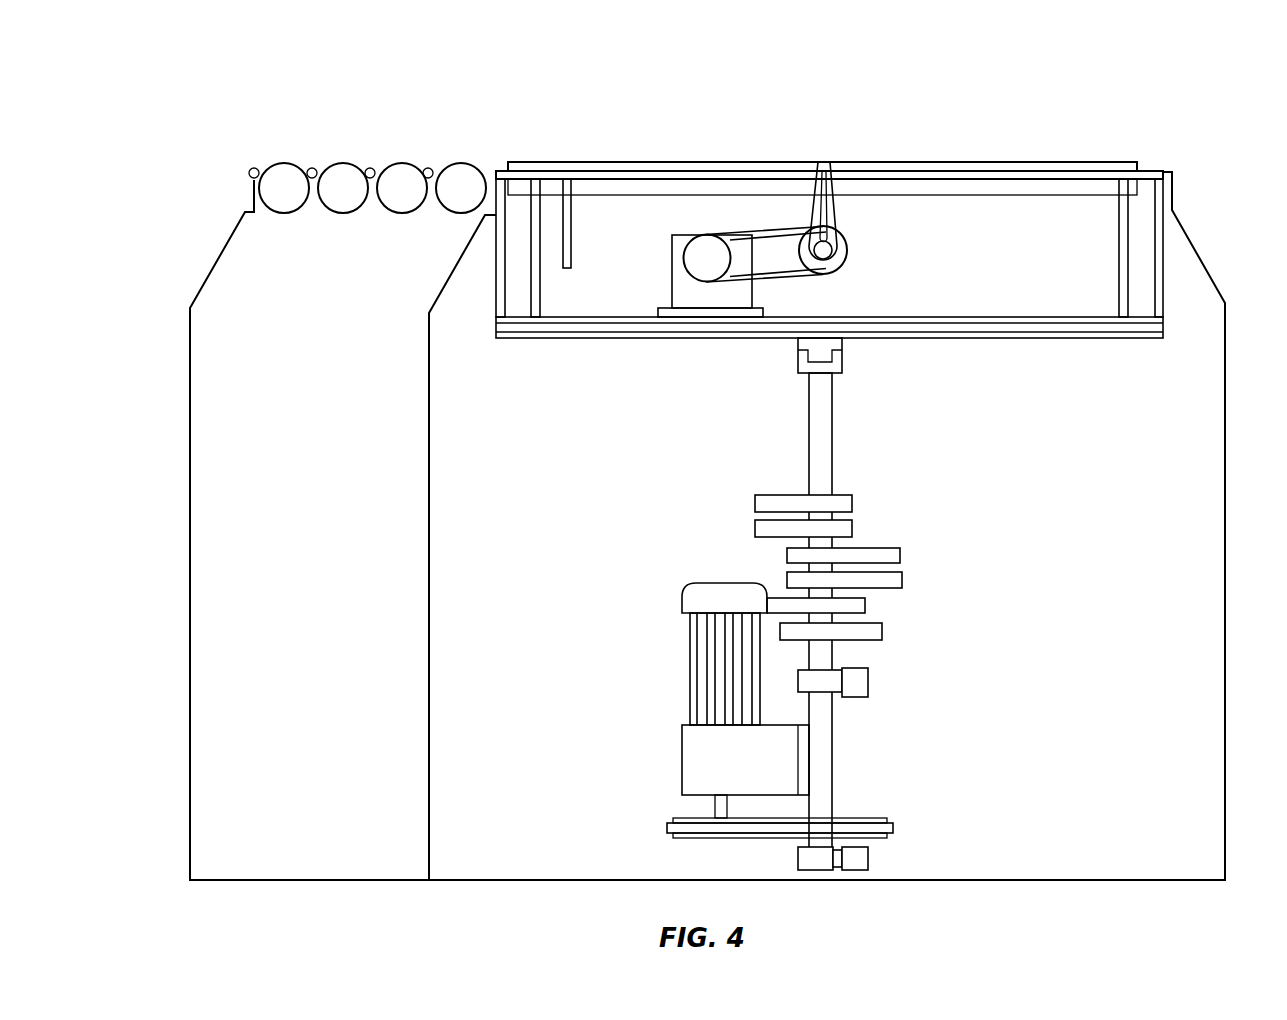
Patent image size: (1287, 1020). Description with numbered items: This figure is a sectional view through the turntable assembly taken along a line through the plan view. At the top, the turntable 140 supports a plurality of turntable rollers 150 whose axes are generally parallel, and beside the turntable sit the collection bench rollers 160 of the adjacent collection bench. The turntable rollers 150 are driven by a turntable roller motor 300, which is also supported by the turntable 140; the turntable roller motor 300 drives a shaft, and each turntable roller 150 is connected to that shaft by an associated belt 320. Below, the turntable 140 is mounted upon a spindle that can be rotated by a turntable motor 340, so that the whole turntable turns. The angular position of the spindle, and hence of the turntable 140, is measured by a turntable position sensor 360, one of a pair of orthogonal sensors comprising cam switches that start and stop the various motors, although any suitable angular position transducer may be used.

The turntable 140 is at (1162, 335).
The turntable rollers 150 is at (1102, 160).
The collection bench rollers 160 is at (390, 153).
The turntable roller motor 300 is at (678, 285).
The belt 320 is at (837, 215).
The turntable motor 340 is at (690, 682).
The turntable position sensor 360 is at (900, 578).